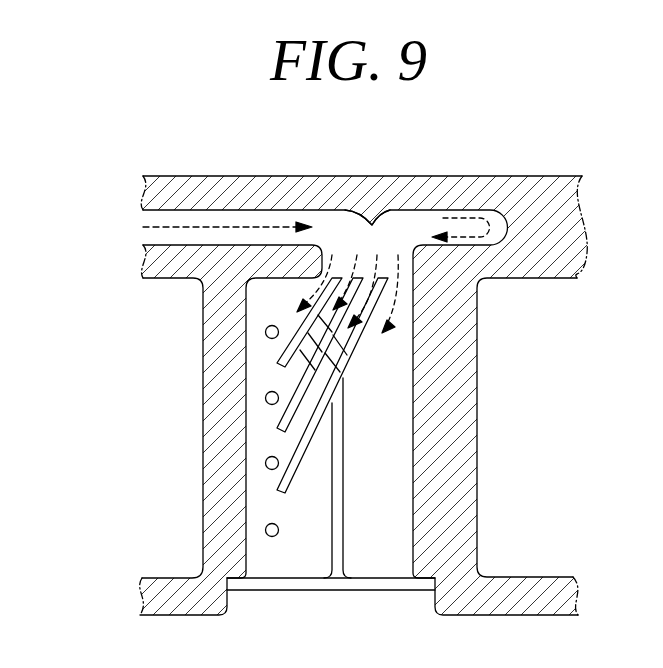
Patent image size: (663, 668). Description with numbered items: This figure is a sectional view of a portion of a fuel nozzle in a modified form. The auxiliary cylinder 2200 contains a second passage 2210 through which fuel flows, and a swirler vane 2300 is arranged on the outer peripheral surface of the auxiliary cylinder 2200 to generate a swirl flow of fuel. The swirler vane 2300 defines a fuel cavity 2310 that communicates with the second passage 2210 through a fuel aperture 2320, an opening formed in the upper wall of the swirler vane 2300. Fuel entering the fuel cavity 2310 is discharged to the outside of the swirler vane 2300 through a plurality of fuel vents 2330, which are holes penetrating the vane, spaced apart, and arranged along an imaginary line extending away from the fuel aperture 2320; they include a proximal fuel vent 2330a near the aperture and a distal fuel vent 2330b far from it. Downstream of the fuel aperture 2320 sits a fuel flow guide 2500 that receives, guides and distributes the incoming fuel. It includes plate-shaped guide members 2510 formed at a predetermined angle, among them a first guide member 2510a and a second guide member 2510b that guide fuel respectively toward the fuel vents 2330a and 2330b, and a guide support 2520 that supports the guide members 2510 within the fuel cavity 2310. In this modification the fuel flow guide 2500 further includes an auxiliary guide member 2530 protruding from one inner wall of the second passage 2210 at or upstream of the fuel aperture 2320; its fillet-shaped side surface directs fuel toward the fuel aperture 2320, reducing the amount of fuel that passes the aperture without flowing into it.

The auxiliary cylinder 2200 is at (497, 183).
The second passage 2210 is at (207, 221).
The swirler vane 2300 is at (460, 513).
The fuel cavity 2310 is at (380, 457).
The fuel aperture 2320 is at (362, 258).
The fuel vents 2330 is at (153, 431).
The proximal fuel vent 2330a is at (266, 336).
The distal fuel vent 2330b is at (264, 525).
The fuel flow guide 2500 is at (369, 428).
The guide members 2510 is at (333, 385).
The first guide member 2510a is at (320, 290).
The second guide member 2510b is at (368, 313).
The guide support 2520 is at (337, 427).
The auxiliary guide member 2530 is at (371, 222).